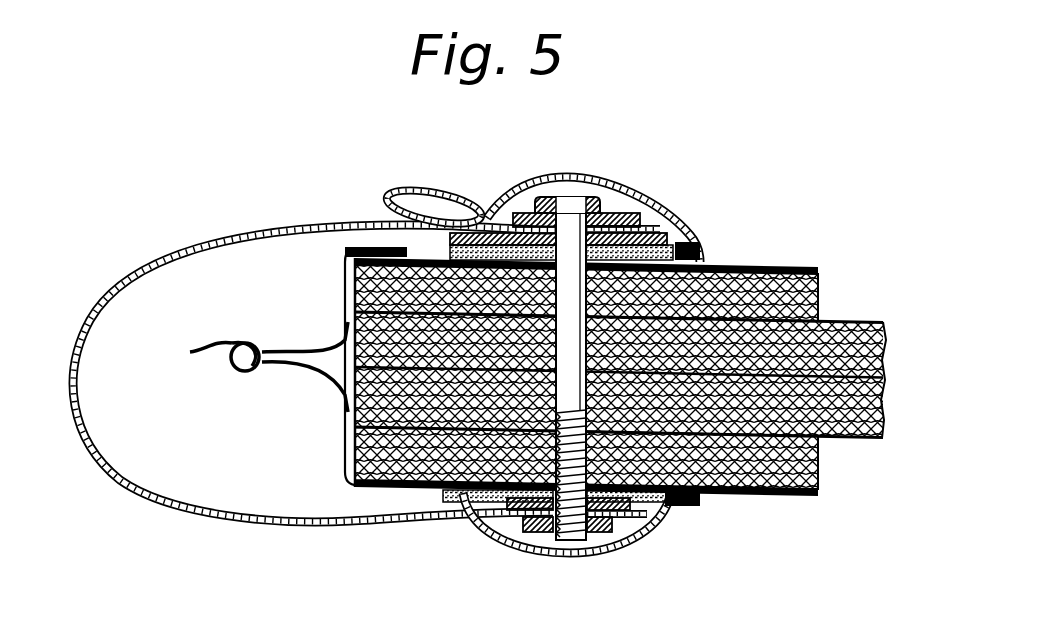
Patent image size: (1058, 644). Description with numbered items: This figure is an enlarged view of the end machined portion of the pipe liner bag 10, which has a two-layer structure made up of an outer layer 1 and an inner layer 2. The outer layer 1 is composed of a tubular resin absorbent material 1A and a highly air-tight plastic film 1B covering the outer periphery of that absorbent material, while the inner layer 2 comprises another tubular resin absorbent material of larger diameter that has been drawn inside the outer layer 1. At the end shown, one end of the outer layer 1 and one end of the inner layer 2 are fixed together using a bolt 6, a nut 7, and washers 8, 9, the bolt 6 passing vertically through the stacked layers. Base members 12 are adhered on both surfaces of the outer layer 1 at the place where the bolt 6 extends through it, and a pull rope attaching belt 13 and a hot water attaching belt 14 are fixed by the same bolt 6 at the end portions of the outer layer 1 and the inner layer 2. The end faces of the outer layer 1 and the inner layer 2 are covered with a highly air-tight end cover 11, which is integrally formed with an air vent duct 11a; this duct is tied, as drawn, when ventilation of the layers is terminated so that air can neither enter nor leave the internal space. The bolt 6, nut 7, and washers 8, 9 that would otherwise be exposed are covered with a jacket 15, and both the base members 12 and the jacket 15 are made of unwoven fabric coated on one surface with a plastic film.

The outer layer 1 is at (631, 360).
The tubular resin absorbent material 1A is at (820, 294).
The highly air-tight plastic film 1B is at (820, 268).
The inner layer 2 is at (860, 453).
The bolt 6 is at (562, 200).
The nut 7 is at (600, 552).
The washer 8 is at (655, 205).
The washer 9 is at (692, 240).
The pipe liner bag 10 is at (764, 258).
The end cover 11 is at (259, 357).
The air vent duct 11a is at (207, 347).
The base member 12 is at (485, 215).
The pull rope attaching belt 13 is at (265, 527).
The hot water attaching belt 14 is at (418, 187).
The jacket 15 is at (630, 213).